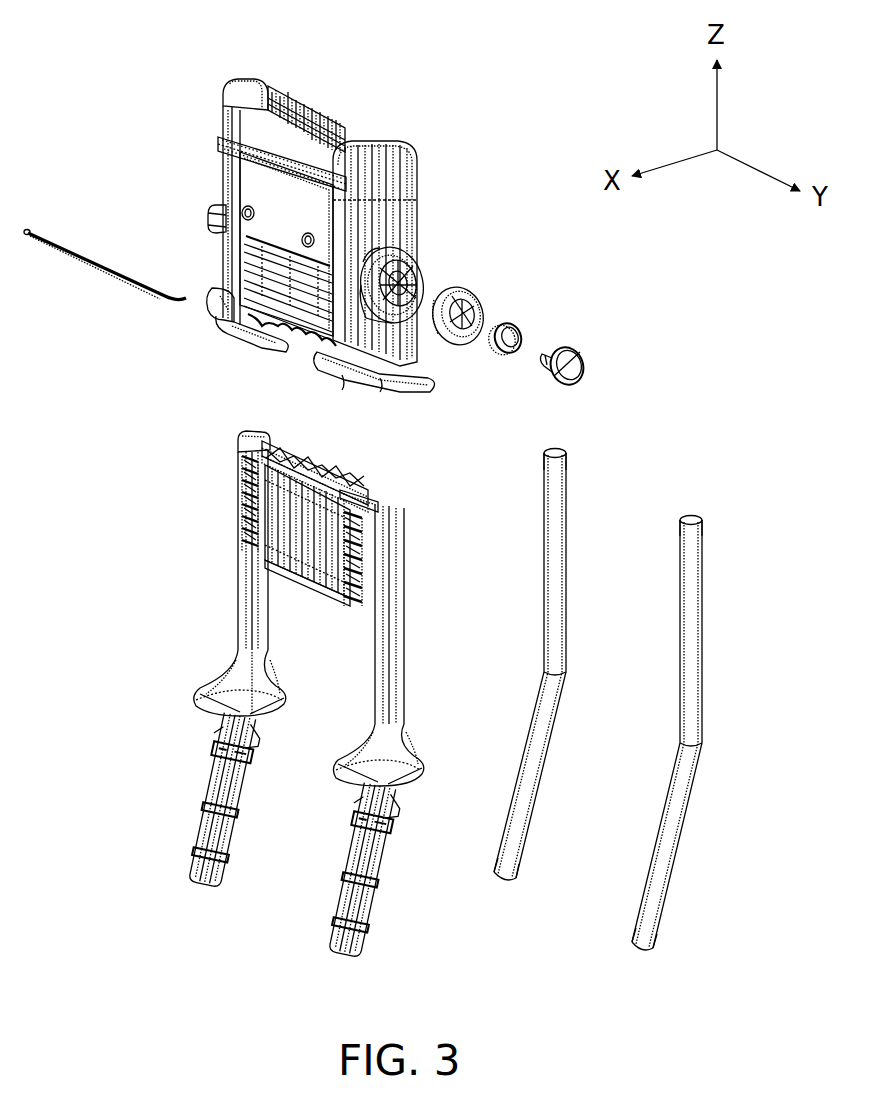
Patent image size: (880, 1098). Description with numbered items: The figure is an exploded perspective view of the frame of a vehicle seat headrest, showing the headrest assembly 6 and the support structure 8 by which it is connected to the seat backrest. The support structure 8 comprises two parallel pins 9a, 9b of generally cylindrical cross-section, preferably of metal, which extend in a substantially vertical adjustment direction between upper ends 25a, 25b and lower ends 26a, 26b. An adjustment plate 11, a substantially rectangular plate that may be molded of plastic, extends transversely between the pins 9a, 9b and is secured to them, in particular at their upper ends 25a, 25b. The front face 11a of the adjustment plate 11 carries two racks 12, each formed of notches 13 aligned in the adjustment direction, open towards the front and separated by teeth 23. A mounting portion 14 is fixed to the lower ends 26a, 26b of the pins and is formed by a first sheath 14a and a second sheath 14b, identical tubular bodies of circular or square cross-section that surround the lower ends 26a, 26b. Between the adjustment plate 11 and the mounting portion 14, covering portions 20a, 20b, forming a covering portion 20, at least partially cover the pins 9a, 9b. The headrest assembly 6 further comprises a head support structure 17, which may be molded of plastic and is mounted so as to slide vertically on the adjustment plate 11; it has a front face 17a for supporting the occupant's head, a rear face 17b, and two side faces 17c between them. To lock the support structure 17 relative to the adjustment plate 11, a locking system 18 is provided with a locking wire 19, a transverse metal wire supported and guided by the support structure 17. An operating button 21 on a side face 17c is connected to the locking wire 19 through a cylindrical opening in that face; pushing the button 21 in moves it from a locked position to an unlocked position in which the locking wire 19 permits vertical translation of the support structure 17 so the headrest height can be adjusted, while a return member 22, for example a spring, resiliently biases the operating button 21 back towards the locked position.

The headrest assembly 6 is at (520, 140).
The support structure 8 is at (160, 680).
The pin 9a is at (566, 576).
The pin 9b is at (700, 616).
The adjustment plate 11 is at (316, 460).
The front face 11a is at (312, 572).
The rack 12 is at (246, 432).
The notches 13 is at (240, 512).
The mounting portion 14 is at (128, 790).
The first sheath 14a is at (194, 832).
The second sheath 14b is at (332, 896).
The support structure 17 is at (186, 70).
The front face 17a is at (232, 176).
The rear face 17b is at (360, 118).
The side faces 17c is at (405, 184).
The locking system 18 is at (528, 292).
The locking wire 19 is at (90, 273).
The covering portion 20 is at (412, 265).
The covering portion 20a is at (240, 628).
The covering portion 20b is at (404, 682).
The operating button 21 is at (580, 358).
The return member 22 is at (506, 352).
The teeth 23 is at (240, 482).
The upper end 25a is at (572, 446).
The upper end 25b is at (708, 514).
The lower end 26a is at (506, 890).
The lower end 26b is at (642, 958).